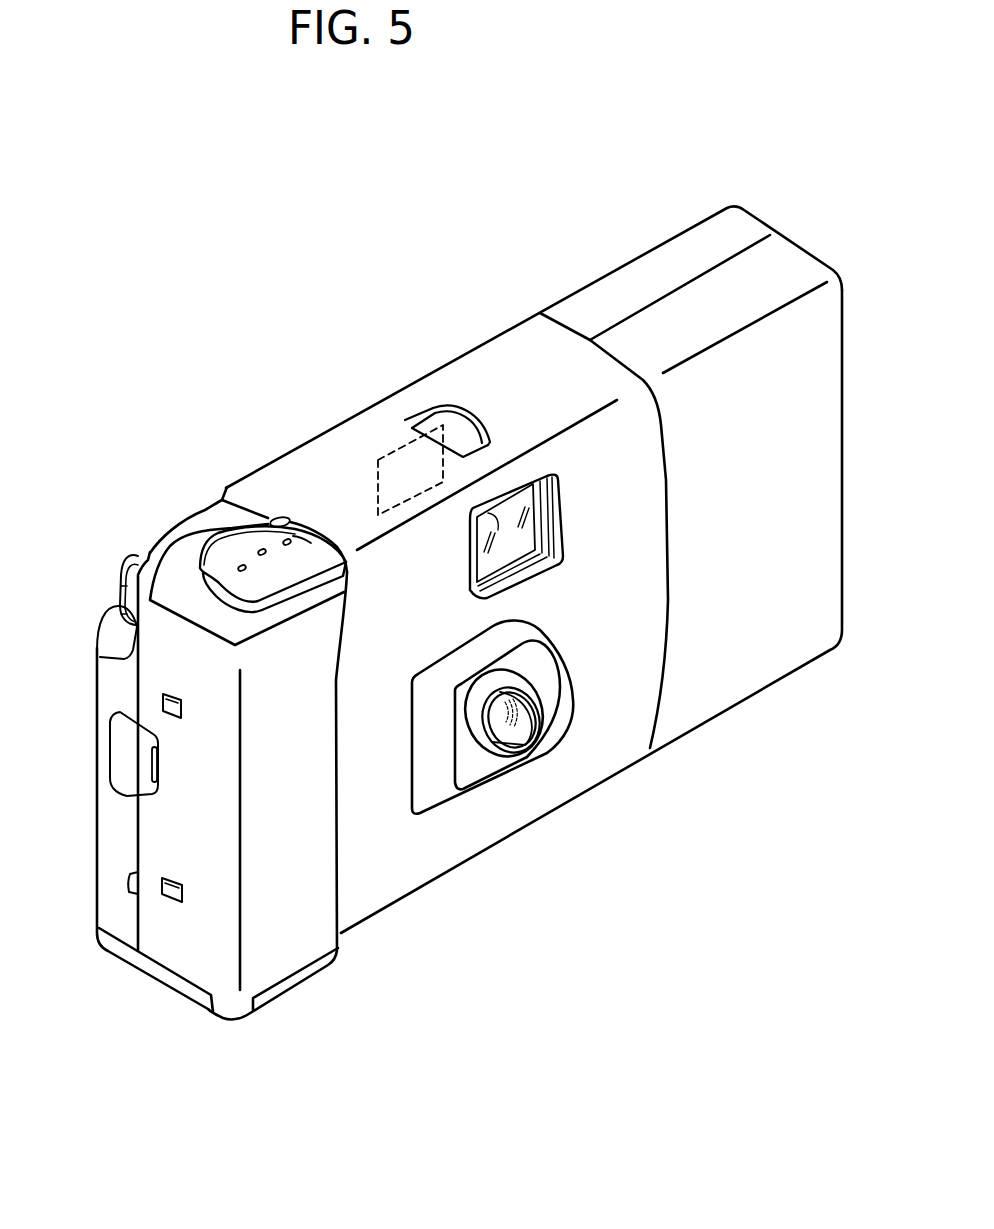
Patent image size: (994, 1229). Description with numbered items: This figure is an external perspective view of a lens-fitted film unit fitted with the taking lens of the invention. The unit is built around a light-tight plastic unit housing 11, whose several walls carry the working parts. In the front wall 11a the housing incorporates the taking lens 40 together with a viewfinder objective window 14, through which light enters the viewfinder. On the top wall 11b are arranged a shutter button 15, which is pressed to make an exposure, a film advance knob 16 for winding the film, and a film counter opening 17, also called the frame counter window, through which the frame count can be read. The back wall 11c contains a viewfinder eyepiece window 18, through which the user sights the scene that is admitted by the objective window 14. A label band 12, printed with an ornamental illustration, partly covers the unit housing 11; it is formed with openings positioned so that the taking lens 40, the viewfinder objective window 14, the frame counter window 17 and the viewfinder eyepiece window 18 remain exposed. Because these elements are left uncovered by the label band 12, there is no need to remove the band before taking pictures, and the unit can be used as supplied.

The unit housing 11 is at (205, 1022).
The front wall 11a is at (748, 660).
The top wall 11b is at (767, 290).
The back wall 11c is at (497, 330).
The label band 12 is at (413, 842).
The viewfinder objective window 14 is at (474, 532).
The shutter button 15 is at (227, 535).
The film advance knob 16 is at (123, 560).
The film counter opening 17 is at (424, 408).
The viewfinder eyepiece window 18 is at (398, 449).
The taking lens 40 is at (520, 725).